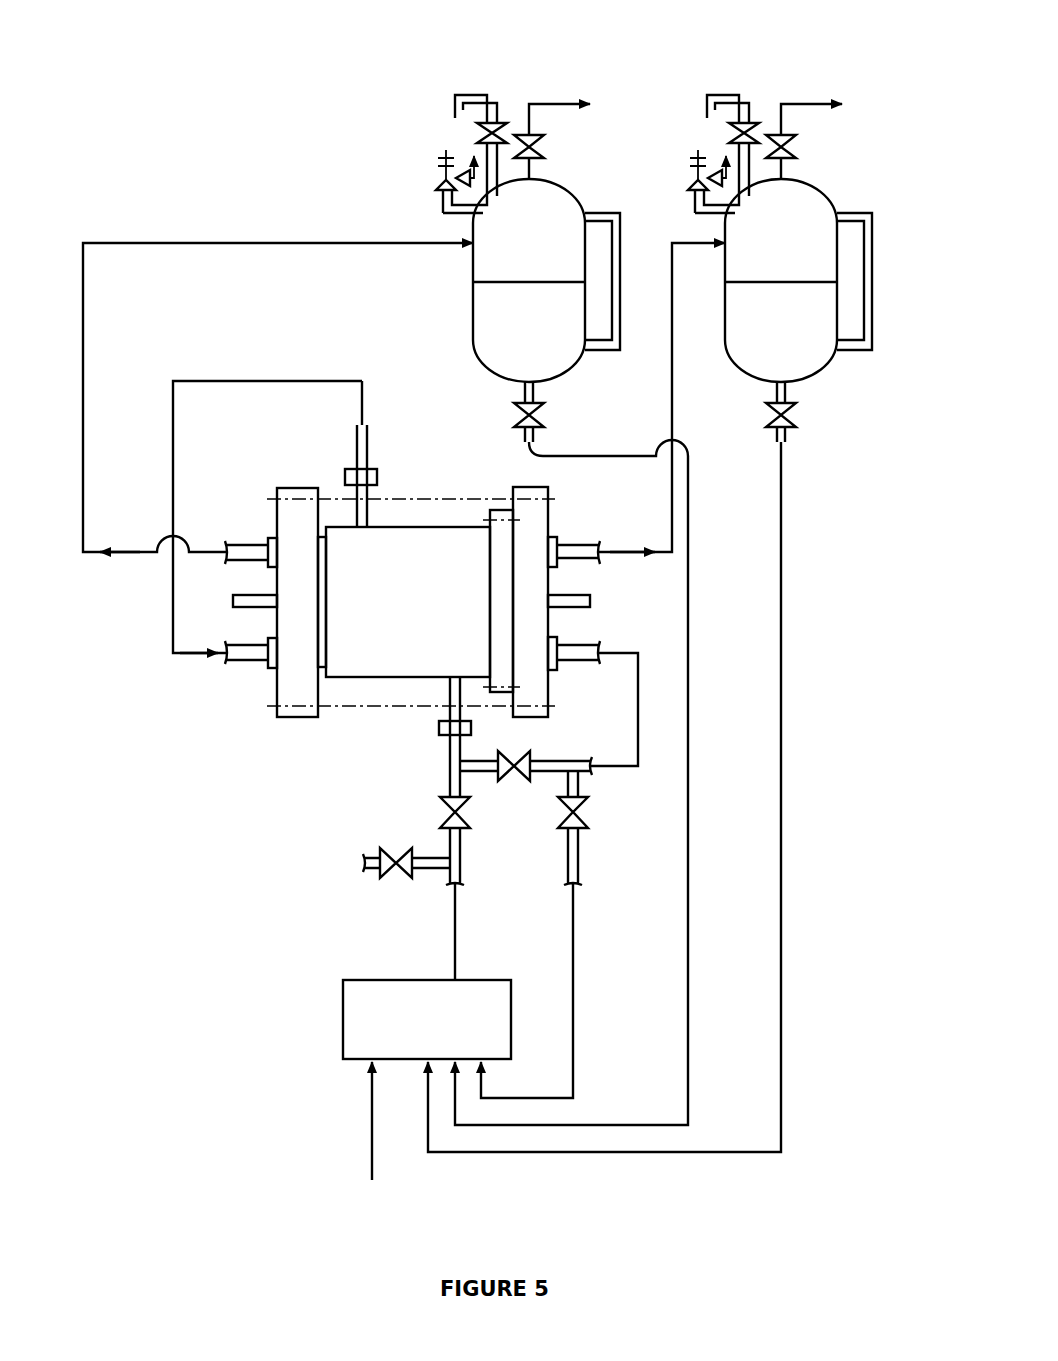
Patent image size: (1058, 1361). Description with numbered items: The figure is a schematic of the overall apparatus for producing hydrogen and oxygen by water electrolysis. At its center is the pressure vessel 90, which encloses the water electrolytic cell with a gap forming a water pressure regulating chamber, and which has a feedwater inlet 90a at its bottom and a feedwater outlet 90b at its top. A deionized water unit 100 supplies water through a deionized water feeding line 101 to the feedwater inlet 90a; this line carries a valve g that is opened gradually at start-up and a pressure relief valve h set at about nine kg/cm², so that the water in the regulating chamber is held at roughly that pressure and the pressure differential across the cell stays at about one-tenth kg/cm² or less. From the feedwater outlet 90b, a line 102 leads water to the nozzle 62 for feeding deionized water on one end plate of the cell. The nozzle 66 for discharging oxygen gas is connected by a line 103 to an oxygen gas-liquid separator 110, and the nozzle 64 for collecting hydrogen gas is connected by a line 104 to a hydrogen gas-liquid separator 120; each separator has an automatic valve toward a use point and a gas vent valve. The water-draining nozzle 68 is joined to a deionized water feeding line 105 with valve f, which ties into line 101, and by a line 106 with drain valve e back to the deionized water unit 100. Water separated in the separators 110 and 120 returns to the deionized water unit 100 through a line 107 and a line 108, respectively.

The nozzle for feeding deionized water 62 is at (268, 672).
The nozzle for collecting hydrogen gas 64 is at (556, 538).
The nozzle for discharging oxygen gas 66 is at (270, 538).
The water-draining nozzle 68 is at (570, 645).
The pressure vessel 90 is at (432, 548).
The feedwater inlet 90a is at (440, 733).
The feedwater outlet 90b is at (367, 512).
The deionized water unit 100 is at (343, 1025).
The deionized water feeding line 101 is at (456, 862).
The line 102 is at (237, 381).
The line 103 is at (237, 243).
The line 104 is at (672, 370).
The deionized water feeding line 105 is at (550, 768).
The line 106 is at (575, 930).
The line 107 is at (690, 590).
The line 108 is at (783, 590).
The oxygen gas-liquid separator 110 is at (578, 195).
The hydrogen gas-liquid separator 120 is at (830, 195).